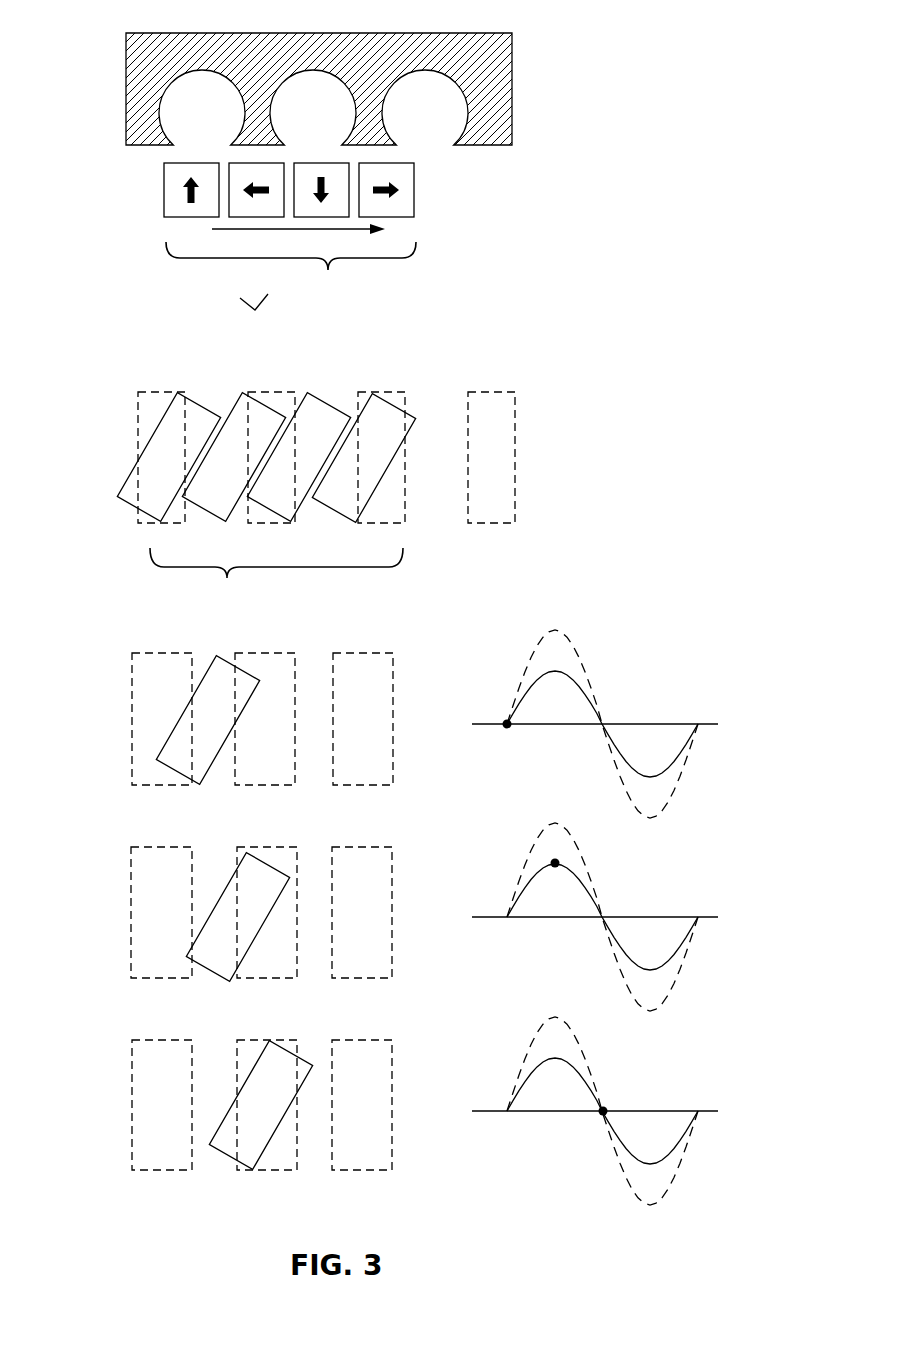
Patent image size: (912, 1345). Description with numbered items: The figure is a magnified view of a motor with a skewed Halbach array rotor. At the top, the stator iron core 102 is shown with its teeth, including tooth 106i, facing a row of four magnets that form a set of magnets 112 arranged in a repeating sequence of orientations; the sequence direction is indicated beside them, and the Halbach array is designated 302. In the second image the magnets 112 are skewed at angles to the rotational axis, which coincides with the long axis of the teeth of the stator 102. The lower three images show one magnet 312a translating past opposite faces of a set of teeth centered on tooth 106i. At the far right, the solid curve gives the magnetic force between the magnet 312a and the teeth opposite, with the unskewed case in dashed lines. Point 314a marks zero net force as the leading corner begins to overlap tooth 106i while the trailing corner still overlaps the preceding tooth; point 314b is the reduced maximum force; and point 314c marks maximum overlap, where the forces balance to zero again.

The iron core 102 is at (512, 80).
The tooth 106i is at (278, 135).
The set of magnets 112 is at (283, 418).
The gesture / swipe direction indicator 302 is at (247, 297).
The magnet 312a is at (164, 210).
The point 314a is at (507, 724).
The point of maximum force 314b is at (555, 863).
The point 314c is at (603, 1111).